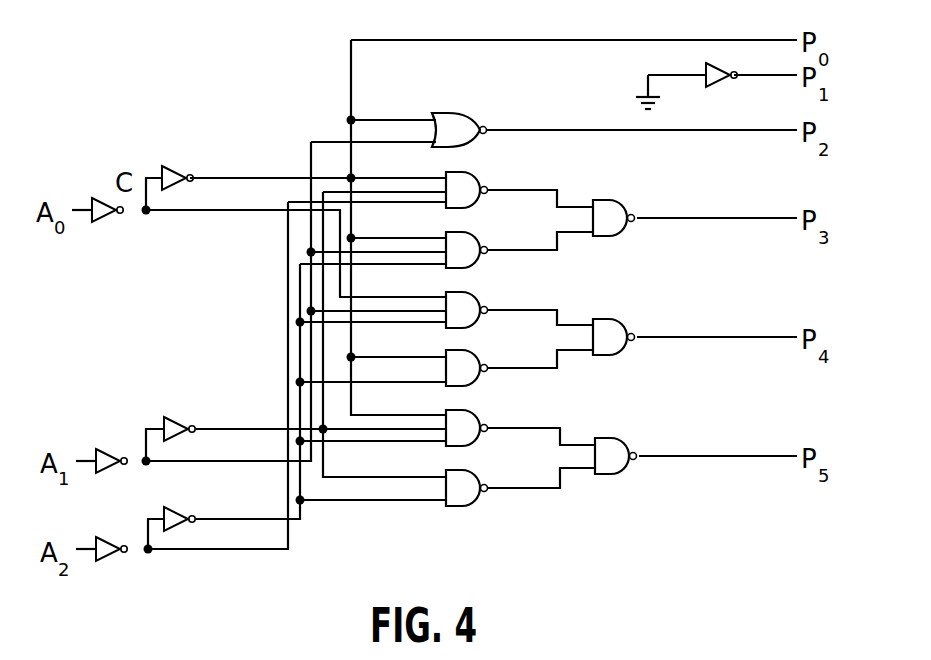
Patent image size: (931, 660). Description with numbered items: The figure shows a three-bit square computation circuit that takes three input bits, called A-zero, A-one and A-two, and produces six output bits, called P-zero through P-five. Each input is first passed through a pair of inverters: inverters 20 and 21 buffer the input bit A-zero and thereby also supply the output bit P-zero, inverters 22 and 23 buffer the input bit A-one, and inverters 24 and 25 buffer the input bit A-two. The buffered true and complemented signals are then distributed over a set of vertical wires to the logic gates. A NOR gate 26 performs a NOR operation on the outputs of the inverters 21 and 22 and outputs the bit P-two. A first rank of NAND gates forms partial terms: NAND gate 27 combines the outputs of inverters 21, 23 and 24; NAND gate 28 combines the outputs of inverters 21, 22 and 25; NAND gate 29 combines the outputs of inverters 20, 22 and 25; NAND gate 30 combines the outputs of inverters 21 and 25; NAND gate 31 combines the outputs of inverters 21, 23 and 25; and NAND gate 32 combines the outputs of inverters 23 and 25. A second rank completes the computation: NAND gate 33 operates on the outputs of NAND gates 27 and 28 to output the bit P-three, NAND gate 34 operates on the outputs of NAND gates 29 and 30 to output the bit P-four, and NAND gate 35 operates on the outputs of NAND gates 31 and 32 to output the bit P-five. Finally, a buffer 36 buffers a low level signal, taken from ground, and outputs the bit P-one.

The inverter 20 is at (105, 224).
The inverter 21 is at (172, 168).
The inverter 22 is at (108, 473).
The inverter 23 is at (178, 419).
The inverter 24 is at (108, 561).
The inverter 25 is at (178, 509).
The NOR gate 26 is at (455, 113).
The NAND gate 27 is at (470, 176).
The NAND gate 28 is at (470, 236).
The NAND gate 29 is at (470, 295).
The NAND gate 30 is at (470, 354).
The NAND gate 31 is at (470, 414).
The NAND gate 32 is at (470, 472).
The NAND gate 33 is at (614, 204).
The NAND gate 34 is at (612, 320).
The NAND gate 35 is at (613, 440).
The buffer 36 is at (717, 68).